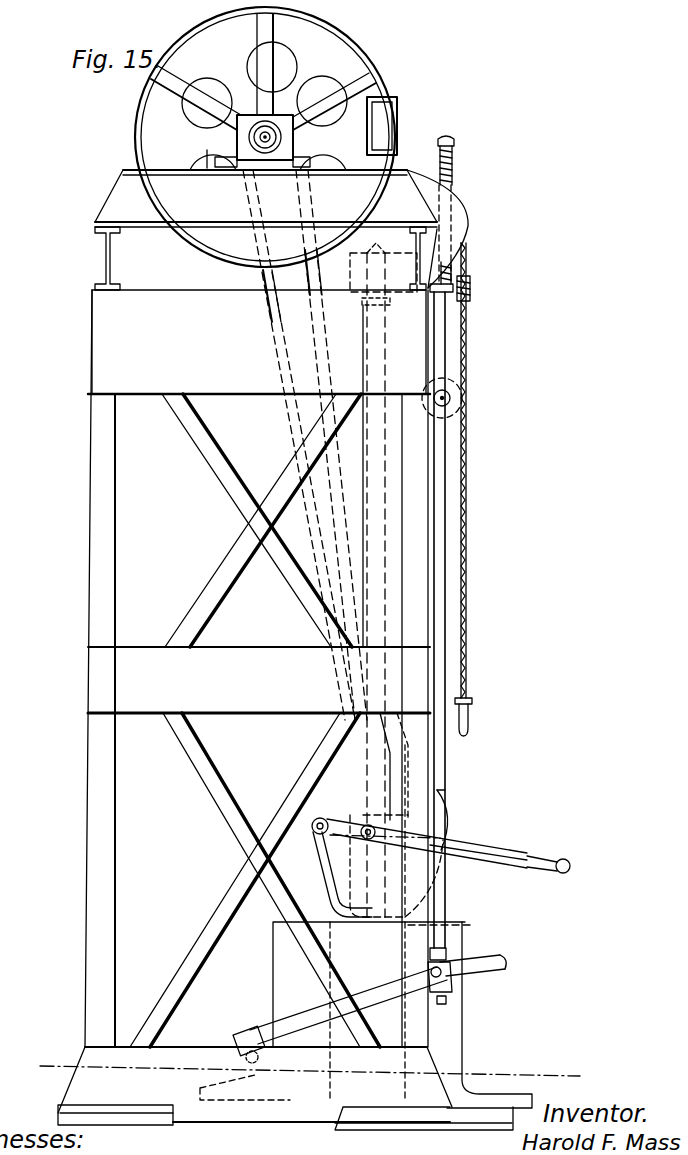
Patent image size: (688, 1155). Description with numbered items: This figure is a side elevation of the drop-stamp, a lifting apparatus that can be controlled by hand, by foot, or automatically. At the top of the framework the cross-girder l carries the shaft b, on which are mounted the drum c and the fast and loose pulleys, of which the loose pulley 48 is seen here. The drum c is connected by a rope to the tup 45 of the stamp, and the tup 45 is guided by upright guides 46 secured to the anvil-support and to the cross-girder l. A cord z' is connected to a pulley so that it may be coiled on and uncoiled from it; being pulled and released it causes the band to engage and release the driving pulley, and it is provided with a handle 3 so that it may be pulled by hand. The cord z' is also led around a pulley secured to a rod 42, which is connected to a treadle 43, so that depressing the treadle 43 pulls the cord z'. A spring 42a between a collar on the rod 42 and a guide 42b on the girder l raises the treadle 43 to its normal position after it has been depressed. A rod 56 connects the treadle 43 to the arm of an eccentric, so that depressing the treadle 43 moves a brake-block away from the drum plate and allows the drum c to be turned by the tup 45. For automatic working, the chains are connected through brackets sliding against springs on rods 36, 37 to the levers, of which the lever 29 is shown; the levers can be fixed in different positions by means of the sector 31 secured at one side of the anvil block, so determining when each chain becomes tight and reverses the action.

The loose pulley 48 is at (266, 137).
The drum c is at (264, 106).
The shaft b is at (236, 140).
The spring 42a is at (456, 180).
The guide 42b is at (473, 291).
The cord z' is at (485, 470).
The handle 3 is at (471, 718).
The cross-girder l is at (420, 243).
The rod 56 is at (468, 403).
The rod 36 is at (292, 429).
The rod 37 is at (339, 494).
The upright guides 46 is at (366, 568).
The rod 42 is at (443, 535).
The tup 45 is at (345, 800).
The sector 31 is at (458, 820).
The lever 29 is at (463, 849).
The treadle 43 is at (512, 967).